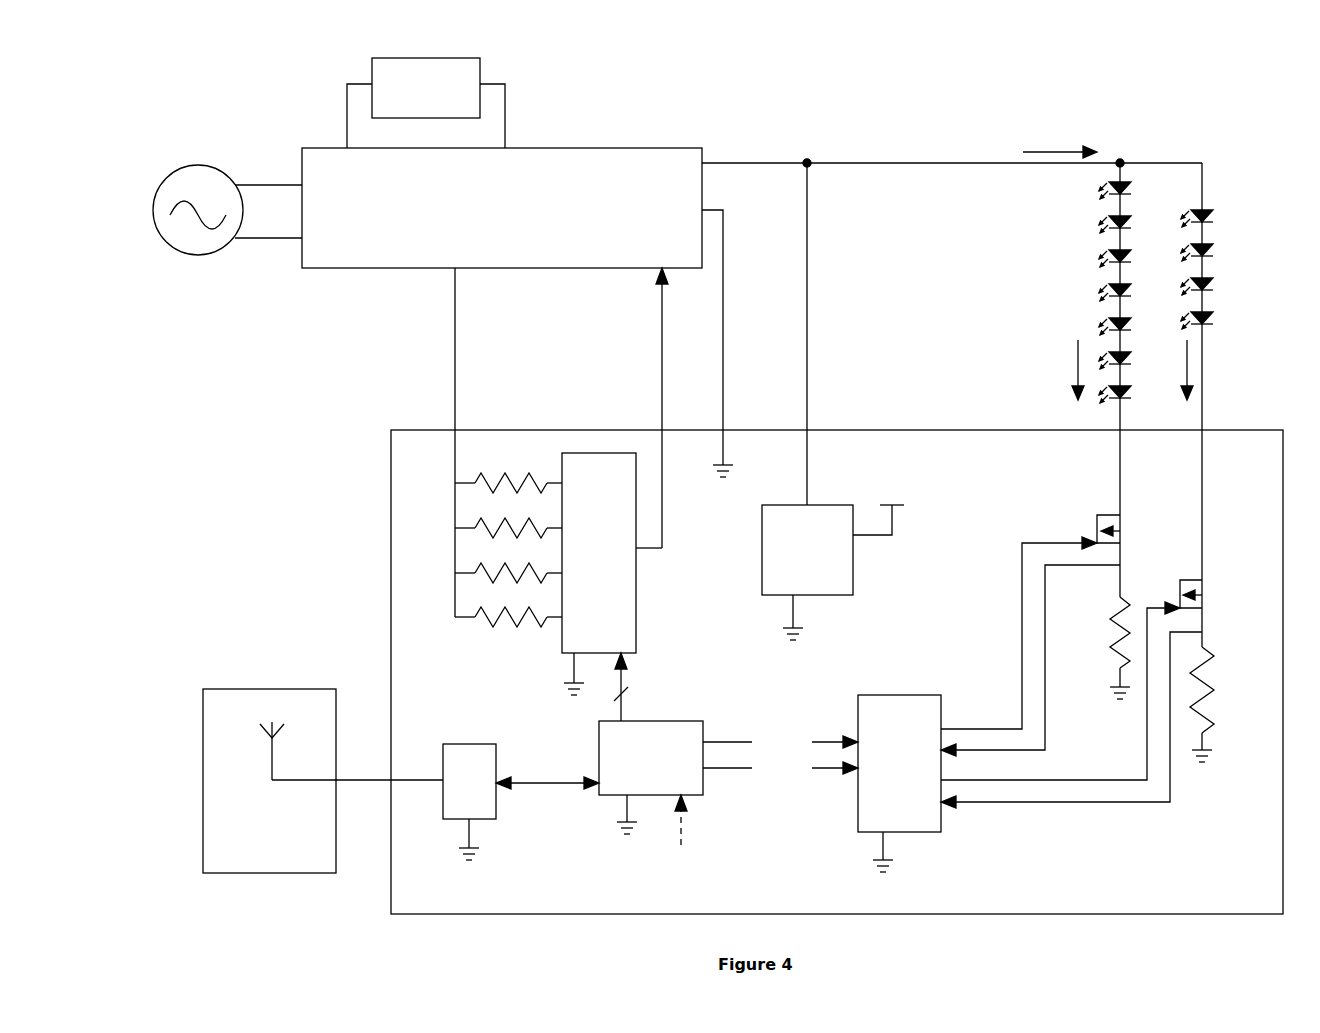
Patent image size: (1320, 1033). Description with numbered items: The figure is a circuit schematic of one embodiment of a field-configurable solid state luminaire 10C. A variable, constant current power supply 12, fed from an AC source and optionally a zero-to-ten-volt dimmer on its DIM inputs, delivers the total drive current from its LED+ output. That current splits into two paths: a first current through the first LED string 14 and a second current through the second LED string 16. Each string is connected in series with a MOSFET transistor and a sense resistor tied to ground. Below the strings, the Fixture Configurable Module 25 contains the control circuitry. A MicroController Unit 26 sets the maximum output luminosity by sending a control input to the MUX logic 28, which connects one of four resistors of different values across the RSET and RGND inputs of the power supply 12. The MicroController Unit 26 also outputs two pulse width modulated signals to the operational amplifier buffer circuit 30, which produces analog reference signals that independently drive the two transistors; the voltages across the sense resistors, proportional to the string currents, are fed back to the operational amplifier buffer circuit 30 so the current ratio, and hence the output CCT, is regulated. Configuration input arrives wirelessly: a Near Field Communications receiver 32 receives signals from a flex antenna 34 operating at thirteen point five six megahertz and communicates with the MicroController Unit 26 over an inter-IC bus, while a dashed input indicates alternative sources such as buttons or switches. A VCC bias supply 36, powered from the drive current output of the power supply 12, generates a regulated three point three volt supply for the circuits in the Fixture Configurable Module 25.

The field-configurable solid state luminaire 10C is at (1234, 110).
The variable, constant current power supply 12 is at (607, 146).
The first LED string 14 is at (1060, 266).
The second LED string 16 is at (1254, 264).
The Fixture Configurable Module 25 is at (837, 672).
The MicroController Unit 26 is at (651, 758).
The MUX logic 28 is at (599, 553).
The operational amplifier buffer circuit 30 is at (899, 763).
The Near Field Communications receiver 32 is at (469, 781).
The antenna 34 is at (323, 781).
The VCC bias supply 36 is at (807, 550).